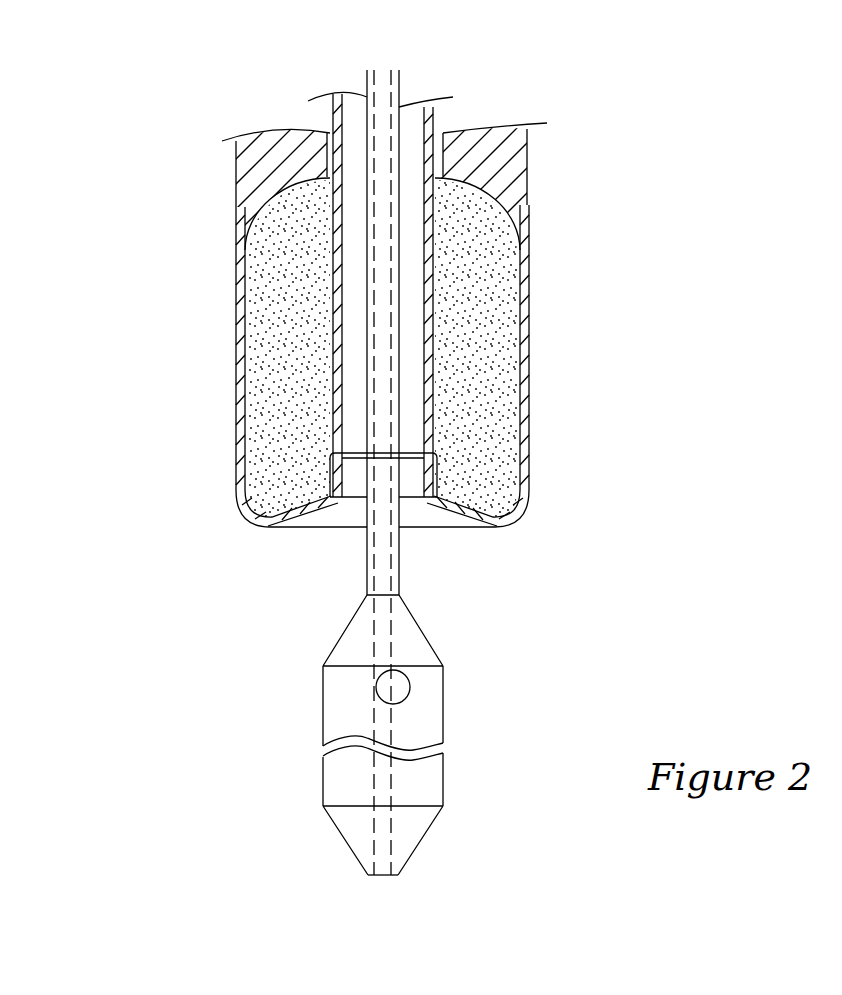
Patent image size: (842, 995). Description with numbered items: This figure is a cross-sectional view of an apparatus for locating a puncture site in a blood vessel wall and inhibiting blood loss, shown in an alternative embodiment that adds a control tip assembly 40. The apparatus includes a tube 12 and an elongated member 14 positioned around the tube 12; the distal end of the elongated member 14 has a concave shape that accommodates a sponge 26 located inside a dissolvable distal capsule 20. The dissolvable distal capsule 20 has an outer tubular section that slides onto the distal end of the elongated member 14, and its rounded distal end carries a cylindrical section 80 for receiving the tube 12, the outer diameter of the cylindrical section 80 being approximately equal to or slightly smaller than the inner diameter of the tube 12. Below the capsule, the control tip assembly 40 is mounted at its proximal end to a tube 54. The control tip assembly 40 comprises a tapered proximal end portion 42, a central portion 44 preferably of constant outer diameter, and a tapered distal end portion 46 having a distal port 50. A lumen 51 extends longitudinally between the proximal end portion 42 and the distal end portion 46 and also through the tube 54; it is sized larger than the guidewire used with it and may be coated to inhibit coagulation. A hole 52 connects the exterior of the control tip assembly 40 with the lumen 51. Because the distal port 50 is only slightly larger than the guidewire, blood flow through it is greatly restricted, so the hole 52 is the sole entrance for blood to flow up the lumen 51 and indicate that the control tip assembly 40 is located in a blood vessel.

The tube 12 is at (434, 119).
The elongated member 14 is at (520, 165).
The dissolvable distal capsule 20 is at (238, 317).
The sponge 26 is at (497, 312).
The control tip assembly 40 is at (356, 738).
The proximal end portion 42 is at (405, 607).
The central portion 44 is at (445, 708).
The distal end portion 46 is at (423, 837).
The distal port 50 is at (368, 876).
The lumen 51 is at (383, 72).
The hole 52 is at (410, 671).
The tube 54 is at (367, 580).
The cylindrical section 80 is at (343, 498).